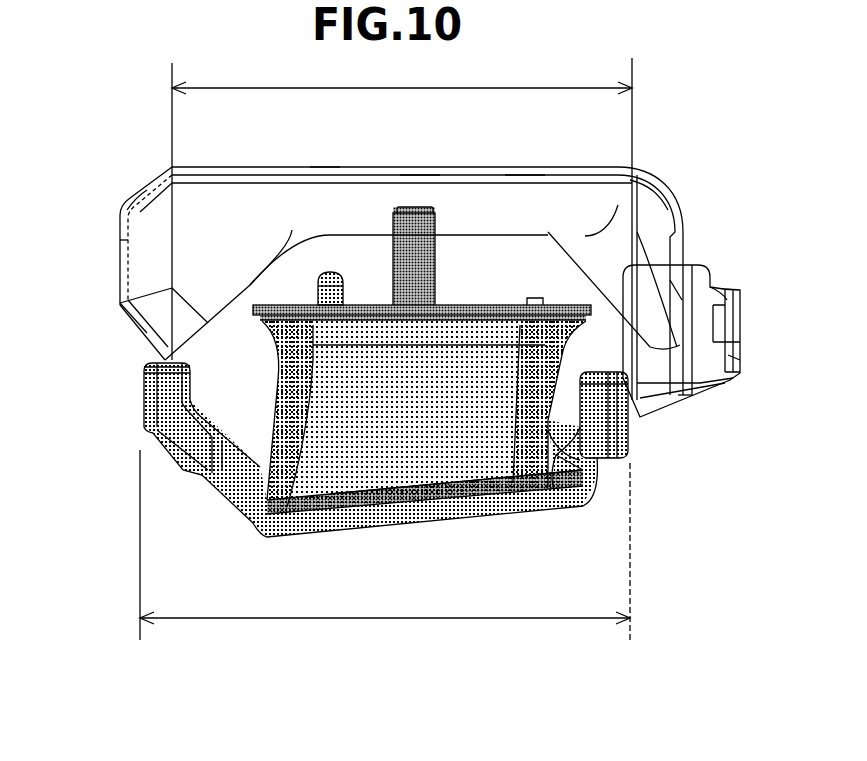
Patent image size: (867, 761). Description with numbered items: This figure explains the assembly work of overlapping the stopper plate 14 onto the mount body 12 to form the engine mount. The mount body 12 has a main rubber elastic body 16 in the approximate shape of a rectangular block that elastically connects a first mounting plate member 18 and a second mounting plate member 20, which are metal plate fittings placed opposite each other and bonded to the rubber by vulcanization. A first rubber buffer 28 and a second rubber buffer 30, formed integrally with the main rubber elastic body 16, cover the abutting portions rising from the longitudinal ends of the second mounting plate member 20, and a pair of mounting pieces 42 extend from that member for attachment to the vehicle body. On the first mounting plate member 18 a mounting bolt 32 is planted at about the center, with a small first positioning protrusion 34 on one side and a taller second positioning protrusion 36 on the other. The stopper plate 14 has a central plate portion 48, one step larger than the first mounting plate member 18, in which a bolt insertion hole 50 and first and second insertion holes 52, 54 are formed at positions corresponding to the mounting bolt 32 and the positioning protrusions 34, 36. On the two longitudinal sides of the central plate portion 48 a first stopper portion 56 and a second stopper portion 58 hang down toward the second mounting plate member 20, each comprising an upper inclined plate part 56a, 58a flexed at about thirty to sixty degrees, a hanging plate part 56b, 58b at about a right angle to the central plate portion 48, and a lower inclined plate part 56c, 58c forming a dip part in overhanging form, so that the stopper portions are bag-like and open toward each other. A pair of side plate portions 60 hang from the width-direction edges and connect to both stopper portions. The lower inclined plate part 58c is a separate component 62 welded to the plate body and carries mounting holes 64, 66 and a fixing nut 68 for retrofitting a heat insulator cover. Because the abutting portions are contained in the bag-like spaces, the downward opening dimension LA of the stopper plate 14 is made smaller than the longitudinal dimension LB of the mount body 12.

The mount body 12 is at (567, 526).
The stopper plate 14 is at (682, 148).
The main rubber elastic body 16 is at (458, 484).
The first mounting plate member 18 is at (560, 292).
The second mounting plate member 20 is at (284, 541).
The first rubber buffer 28 is at (167, 403).
The second rubber buffer 30 is at (600, 417).
The mounting bolt 32 is at (413, 243).
The first positioning protrusion 34 is at (537, 294).
The second positioning protrusion 36 is at (330, 290).
The mounting piece 42 is at (432, 516).
The central plate portion 48 is at (357, 175).
The bolt insertion hole 50 is at (412, 171).
The first insertion hole 52 is at (520, 170).
The second insertion hole 54 is at (328, 173).
The first stopper portion 56 is at (52, 212).
The upper inclined plate part 56a is at (147, 191).
The hanging plate part 56b is at (124, 257).
The lower inclined plate part 56c is at (147, 333).
The second stopper portion 58 is at (750, 175).
The upper inclined plate part 58a is at (657, 205).
The hanging plate part 58b is at (675, 292).
The lower inclined plate part 58c is at (678, 403).
The side plate portion 60 is at (292, 230).
The separate component 62 is at (705, 410).
The mounting hole 64 is at (740, 317).
The mounting hole 66 is at (738, 353).
The fixing nut 68 is at (727, 300).